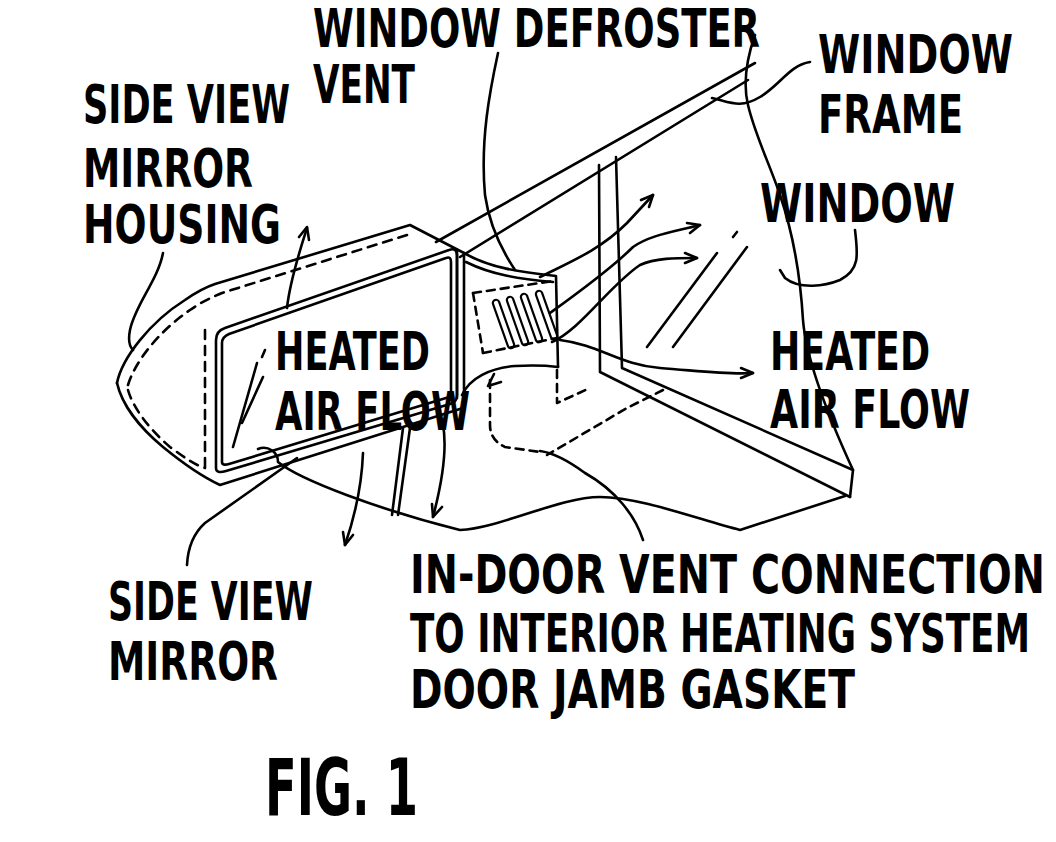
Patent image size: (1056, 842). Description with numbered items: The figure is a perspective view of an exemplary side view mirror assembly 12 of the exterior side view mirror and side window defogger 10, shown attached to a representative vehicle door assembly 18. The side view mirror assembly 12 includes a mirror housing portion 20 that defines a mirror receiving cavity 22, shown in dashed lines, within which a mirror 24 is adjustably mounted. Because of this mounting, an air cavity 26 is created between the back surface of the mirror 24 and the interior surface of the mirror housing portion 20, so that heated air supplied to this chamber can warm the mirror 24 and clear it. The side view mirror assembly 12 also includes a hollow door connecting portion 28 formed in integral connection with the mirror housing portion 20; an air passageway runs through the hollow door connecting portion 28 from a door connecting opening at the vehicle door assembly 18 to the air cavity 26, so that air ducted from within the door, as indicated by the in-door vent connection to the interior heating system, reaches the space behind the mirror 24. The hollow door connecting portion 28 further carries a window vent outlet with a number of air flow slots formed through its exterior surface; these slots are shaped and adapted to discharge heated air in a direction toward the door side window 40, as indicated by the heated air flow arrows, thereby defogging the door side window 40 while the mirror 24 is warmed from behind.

The exterior side view mirror and side window defogger 10 is at (498, 167).
The side view mirror assembly 12 is at (383, 228).
The vehicle door assembly 18 is at (413, 493).
The mirror housing portion 20 is at (333, 247).
The mirror receiving cavity 22 is at (185, 450).
The mirror 24 is at (437, 316).
The air cavity 26 is at (205, 409).
The hollow door connecting portion 28 is at (530, 265).
The door side window 40 is at (757, 338).